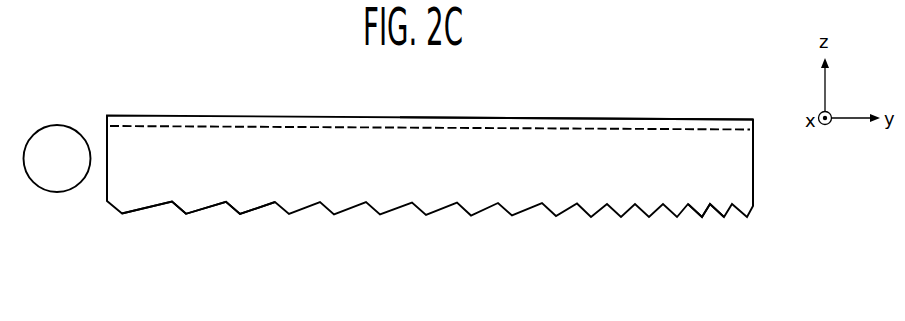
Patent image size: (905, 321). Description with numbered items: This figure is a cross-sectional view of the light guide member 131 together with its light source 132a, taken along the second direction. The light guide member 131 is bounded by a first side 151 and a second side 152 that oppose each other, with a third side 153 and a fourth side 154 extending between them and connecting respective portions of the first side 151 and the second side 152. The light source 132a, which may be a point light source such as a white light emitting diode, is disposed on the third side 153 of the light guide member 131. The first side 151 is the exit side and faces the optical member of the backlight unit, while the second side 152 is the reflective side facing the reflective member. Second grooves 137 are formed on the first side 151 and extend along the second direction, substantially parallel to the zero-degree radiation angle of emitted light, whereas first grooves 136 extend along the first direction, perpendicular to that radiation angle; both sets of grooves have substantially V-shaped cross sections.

The light guide member 131 is at (748, 152).
The light source 132a is at (55, 138).
The first grooves 136 is at (180, 205).
The second grooves 137 is at (240, 118).
The first side 151 is at (712, 216).
The second side 152 is at (679, 108).
The third side 153 is at (97, 178).
The fourth side 154 is at (762, 185).